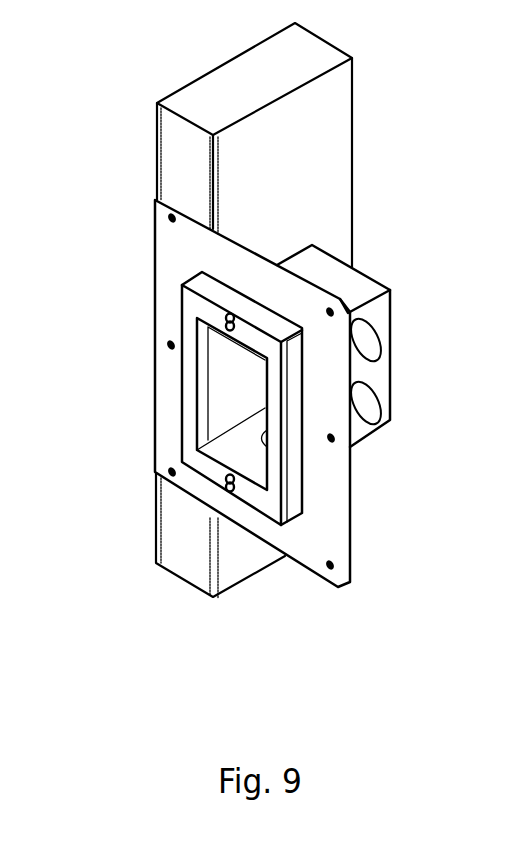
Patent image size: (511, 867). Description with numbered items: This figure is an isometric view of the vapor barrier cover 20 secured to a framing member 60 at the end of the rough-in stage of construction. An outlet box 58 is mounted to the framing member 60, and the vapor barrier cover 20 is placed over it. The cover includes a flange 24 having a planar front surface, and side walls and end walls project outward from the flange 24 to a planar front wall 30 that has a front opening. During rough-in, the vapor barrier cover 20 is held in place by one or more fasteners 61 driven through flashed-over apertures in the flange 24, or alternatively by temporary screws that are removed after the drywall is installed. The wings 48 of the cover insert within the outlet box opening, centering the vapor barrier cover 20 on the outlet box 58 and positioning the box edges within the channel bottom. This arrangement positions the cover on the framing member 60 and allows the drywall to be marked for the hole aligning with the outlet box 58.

The framing member 60 is at (304, 170).
The fastener 61 is at (168, 222).
The vapor barrier cover 20 is at (155, 392).
The wings 48 is at (202, 423).
The front wall 30 is at (268, 508).
The flange 24 is at (341, 380).
The outlet box 58 is at (393, 363).